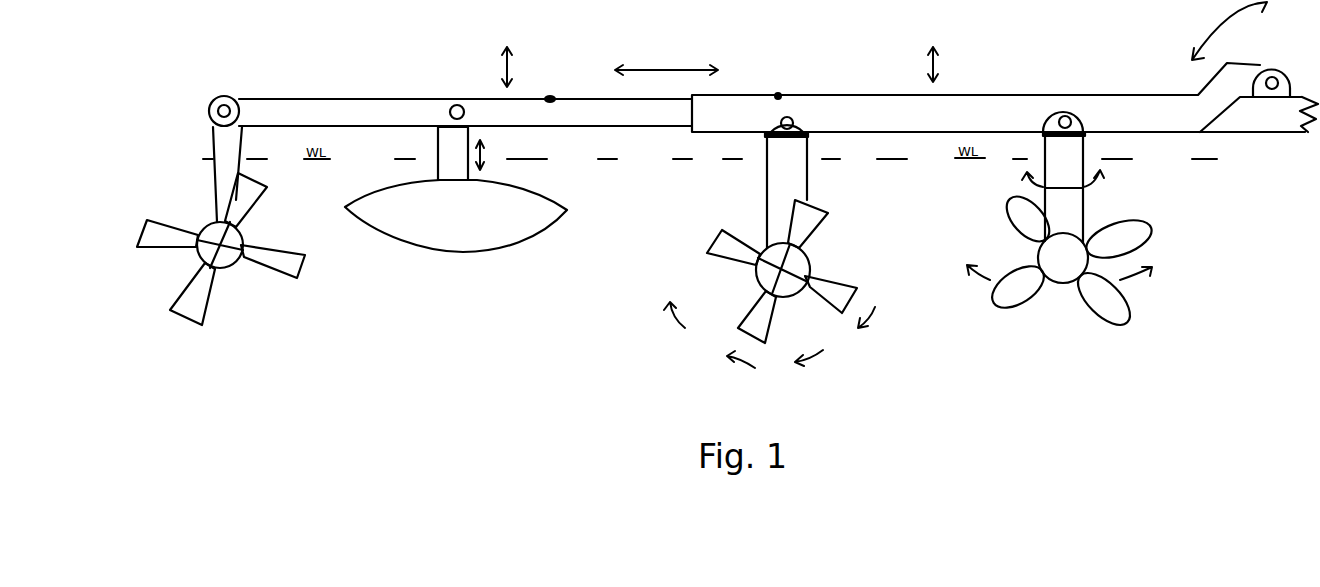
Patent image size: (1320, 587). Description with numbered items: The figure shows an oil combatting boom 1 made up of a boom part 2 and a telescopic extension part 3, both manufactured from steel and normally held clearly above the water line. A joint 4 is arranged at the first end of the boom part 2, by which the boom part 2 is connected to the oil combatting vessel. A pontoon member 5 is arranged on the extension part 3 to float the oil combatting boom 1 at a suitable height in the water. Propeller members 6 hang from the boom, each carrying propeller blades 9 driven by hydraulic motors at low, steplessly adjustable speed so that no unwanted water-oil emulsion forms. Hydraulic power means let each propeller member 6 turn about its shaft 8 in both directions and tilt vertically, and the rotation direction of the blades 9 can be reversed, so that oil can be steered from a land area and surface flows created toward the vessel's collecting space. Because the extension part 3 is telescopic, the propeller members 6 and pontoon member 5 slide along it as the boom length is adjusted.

The oil combatting boom 1 is at (871, 79).
The boom part 2 is at (965, 95).
The extension part 3 is at (312, 100).
The joint 4 is at (1273, 67).
The pontoon member 5 is at (472, 252).
The propeller member 6 is at (672, 281).
The shaft 8 is at (763, 180).
The propeller blade 9 is at (293, 265).